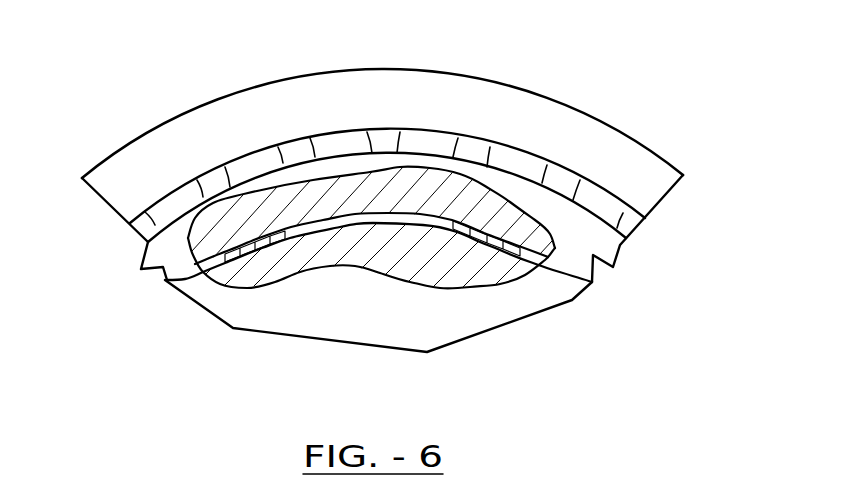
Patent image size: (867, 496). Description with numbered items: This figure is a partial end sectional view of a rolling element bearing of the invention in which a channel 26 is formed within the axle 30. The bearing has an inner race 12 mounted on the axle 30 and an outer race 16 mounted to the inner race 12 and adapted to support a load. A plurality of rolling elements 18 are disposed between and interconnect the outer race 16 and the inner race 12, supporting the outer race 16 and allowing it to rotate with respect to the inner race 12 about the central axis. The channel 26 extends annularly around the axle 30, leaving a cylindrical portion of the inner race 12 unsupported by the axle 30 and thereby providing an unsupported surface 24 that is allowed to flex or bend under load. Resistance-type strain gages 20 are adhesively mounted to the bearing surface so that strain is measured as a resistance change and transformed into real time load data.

The inner race 12 is at (597, 241).
The outer race 16 is at (653, 173).
The rolling elements 18 is at (375, 68).
The strain gages 20 is at (250, 257).
The unsupported surface 24 is at (365, 214).
The channel 26 is at (398, 222).
The axle 30 is at (417, 320).